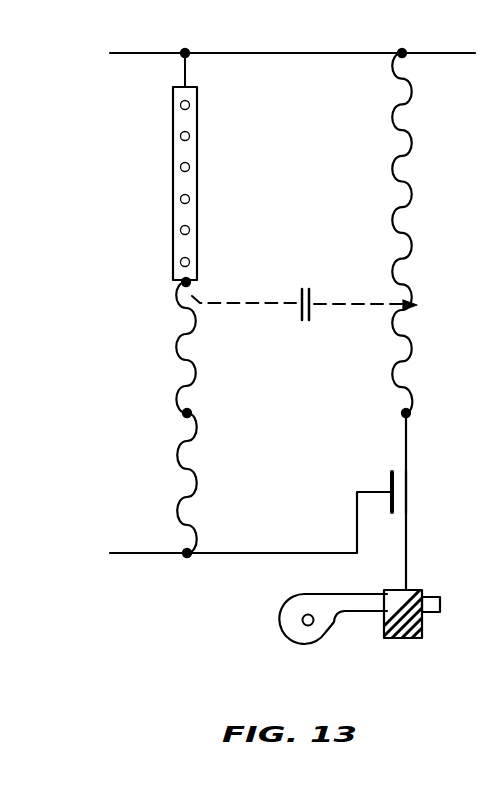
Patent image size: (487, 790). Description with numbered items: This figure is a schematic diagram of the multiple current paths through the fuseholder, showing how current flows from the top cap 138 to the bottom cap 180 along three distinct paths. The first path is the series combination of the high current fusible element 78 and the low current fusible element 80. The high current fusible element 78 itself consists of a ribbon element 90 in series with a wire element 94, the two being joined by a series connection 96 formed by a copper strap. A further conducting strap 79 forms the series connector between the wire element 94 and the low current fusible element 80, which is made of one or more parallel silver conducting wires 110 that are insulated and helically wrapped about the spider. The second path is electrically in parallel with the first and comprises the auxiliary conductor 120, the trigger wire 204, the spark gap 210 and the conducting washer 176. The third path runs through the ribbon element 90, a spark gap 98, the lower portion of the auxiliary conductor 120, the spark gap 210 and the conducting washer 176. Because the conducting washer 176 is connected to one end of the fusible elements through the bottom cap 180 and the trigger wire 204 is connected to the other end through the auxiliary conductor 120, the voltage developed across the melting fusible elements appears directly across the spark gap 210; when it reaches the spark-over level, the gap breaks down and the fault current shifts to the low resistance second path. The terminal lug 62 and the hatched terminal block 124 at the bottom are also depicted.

The top cap 138 is at (278, 53).
The ribbon element 90 is at (197, 128).
The high current fusible element 78 is at (168, 165).
The series connection 96 is at (165, 300).
The wire element 94 is at (194, 370).
The conducting strap 79 is at (184, 413).
The low current fusible element 80 is at (173, 483).
The conducting wire 110 is at (197, 478).
The spark gap 98 is at (305, 278).
The auxiliary conductor 120 is at (436, 231).
The trigger wire 204 is at (410, 492).
The conducting washer 176 is at (390, 476).
The spark gap 210 is at (398, 469).
The bottom cap 180 is at (295, 553).
The terminal lug 62 is at (327, 630).
The terminal block 124 is at (433, 630).